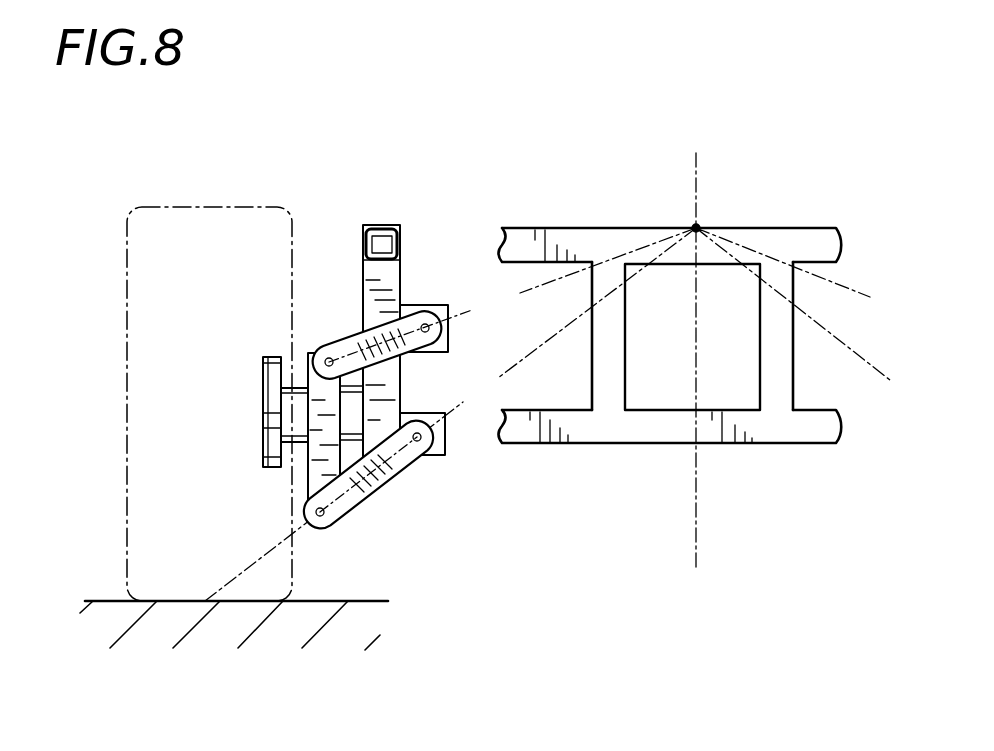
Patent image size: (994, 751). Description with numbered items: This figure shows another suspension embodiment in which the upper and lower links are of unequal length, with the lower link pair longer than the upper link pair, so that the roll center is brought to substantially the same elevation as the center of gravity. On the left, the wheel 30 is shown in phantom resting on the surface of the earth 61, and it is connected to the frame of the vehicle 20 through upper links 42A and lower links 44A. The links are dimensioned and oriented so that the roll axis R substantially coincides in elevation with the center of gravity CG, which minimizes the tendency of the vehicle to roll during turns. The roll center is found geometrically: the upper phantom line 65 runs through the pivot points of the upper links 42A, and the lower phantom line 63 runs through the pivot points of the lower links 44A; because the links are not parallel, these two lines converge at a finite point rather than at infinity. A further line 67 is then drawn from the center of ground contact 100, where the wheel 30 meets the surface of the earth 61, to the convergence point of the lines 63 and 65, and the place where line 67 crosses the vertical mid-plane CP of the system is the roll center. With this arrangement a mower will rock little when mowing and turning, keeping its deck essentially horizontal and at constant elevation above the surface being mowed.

The vehicle frame 20 is at (694, 316).
The wheel 30 is at (238, 208).
The upper links 42A is at (343, 338).
The lower links 44A is at (378, 493).
The surface of the earth 61 is at (95, 597).
The upper phantom line 65 is at (533, 287).
The lower phantom line 63 is at (692, 337).
The line from ground contact to convergence point 67 is at (637, 273).
The center of ground contact 100 is at (205, 601).